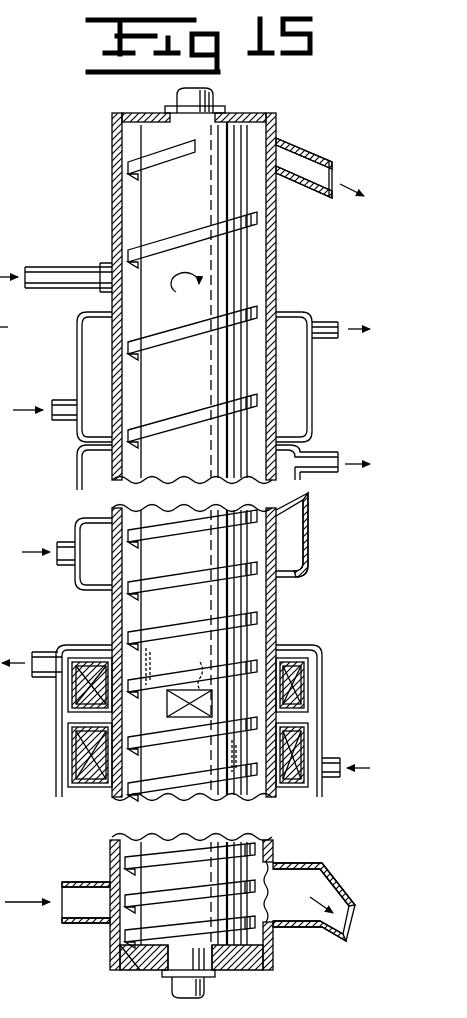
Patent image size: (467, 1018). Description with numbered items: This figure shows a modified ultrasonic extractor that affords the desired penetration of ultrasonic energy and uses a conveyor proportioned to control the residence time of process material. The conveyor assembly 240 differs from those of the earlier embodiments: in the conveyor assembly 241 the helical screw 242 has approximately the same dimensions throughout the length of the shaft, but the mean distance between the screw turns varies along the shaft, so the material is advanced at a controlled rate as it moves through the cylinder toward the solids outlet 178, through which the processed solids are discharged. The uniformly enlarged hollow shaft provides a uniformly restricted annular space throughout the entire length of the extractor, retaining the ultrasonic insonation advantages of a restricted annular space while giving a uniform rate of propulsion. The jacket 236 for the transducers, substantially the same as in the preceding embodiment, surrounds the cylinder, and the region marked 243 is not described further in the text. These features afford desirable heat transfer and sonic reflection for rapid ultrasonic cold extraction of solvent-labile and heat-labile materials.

The conveyor assembly 240 is at (256, 145).
The solids outlet 178 is at (308, 151).
The conveyor assembly 241 is at (200, 205).
The helical screw 242 is at (262, 236).
The rotor magnets 243 is at (150, 657).
The jacket 236 is at (325, 697).